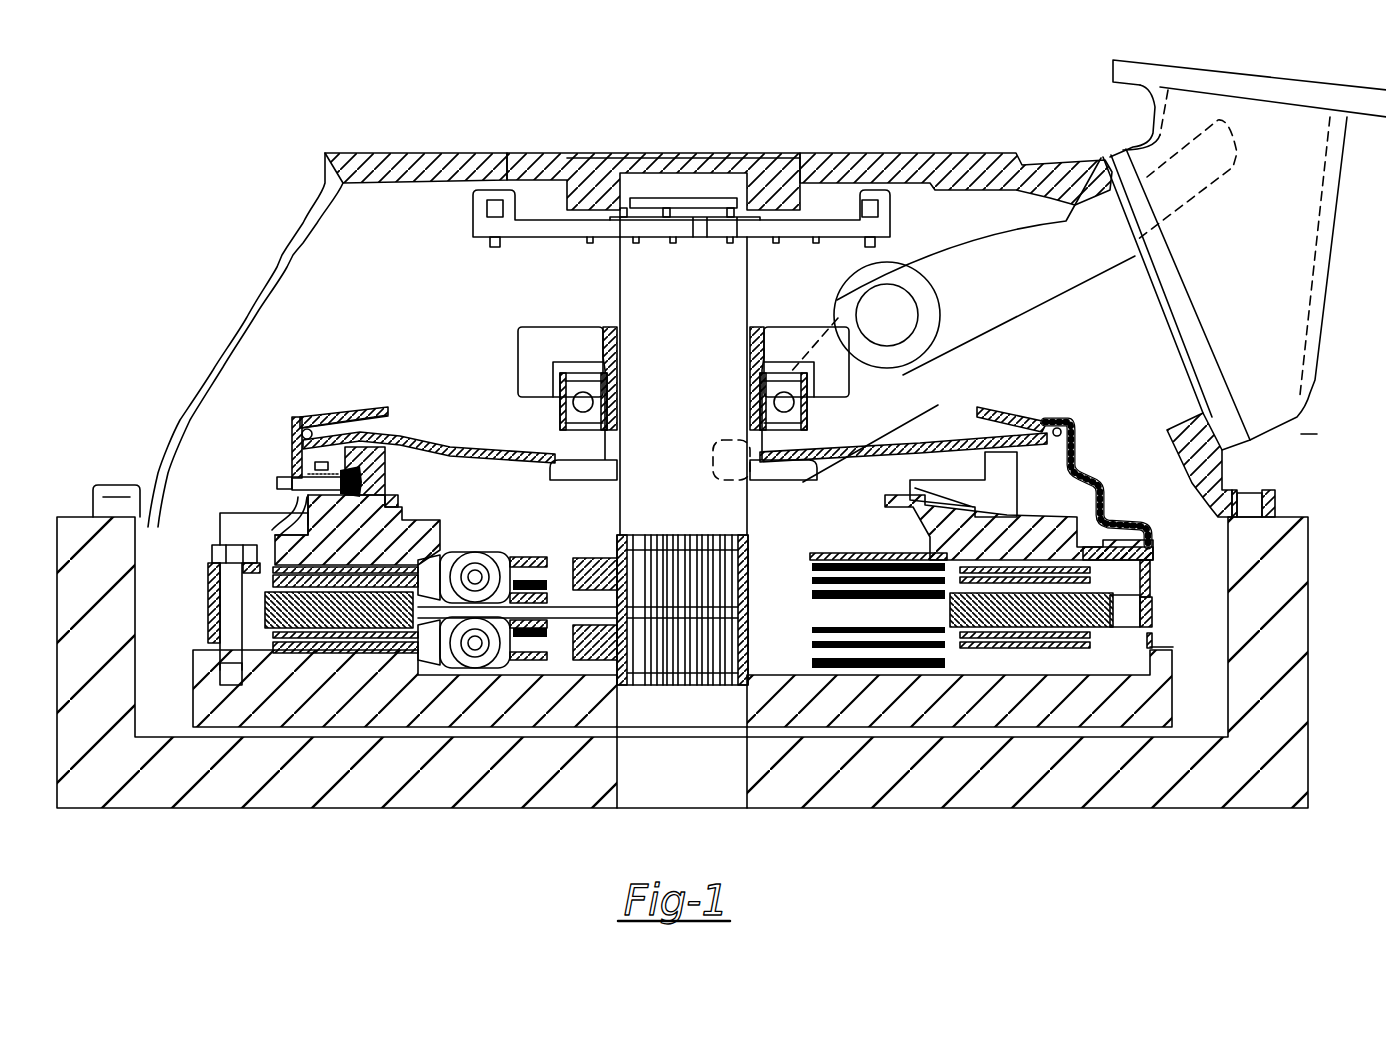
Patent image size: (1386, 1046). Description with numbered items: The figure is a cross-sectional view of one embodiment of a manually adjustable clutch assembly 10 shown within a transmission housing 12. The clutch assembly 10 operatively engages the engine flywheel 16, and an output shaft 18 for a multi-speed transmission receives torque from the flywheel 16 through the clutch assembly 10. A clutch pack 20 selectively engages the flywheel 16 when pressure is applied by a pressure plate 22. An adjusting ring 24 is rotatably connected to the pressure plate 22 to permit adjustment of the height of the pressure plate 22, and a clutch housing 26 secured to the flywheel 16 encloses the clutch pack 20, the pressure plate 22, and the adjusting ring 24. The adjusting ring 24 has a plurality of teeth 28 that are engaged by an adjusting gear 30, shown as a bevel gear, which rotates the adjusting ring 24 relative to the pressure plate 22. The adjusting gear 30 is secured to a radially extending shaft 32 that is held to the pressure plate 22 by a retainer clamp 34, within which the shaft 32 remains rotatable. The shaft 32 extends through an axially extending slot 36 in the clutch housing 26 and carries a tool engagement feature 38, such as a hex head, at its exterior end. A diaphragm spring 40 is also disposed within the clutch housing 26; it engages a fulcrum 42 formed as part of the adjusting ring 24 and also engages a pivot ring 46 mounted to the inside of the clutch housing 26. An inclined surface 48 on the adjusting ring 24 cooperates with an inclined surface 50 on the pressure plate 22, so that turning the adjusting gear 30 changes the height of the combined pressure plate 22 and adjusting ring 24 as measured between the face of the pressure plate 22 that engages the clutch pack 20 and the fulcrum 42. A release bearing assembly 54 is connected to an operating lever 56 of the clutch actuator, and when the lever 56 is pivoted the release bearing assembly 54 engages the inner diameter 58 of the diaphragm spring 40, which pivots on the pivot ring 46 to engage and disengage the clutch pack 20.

The clutch assembly 10 is at (361, 368).
The transmission housing 12 is at (208, 350).
The engine flywheel 16 is at (195, 690).
The output shaft 18 is at (617, 273).
The clutch pack 20 is at (863, 550).
The pressure plate 22 is at (443, 533).
The adjusting ring 24 is at (383, 480).
The clutch housing 26 is at (1080, 467).
The teeth 28 is at (390, 490).
The adjusting gear 30 is at (347, 477).
The shaft 32 is at (305, 474).
The retainer clamp 34 is at (293, 433).
The slot 36 is at (293, 493).
The tool engagement feature 38 is at (277, 483).
The diaphragm spring 40 is at (453, 435).
The fulcrum 42 is at (360, 430).
The pivot ring 46 is at (307, 430).
The inclined surface 48 is at (403, 523).
The inclined surface 50 is at (348, 503).
The release bearing assembly 54 is at (528, 337).
The operating lever 56 is at (1047, 291).
The inner diameter 58 is at (760, 453).